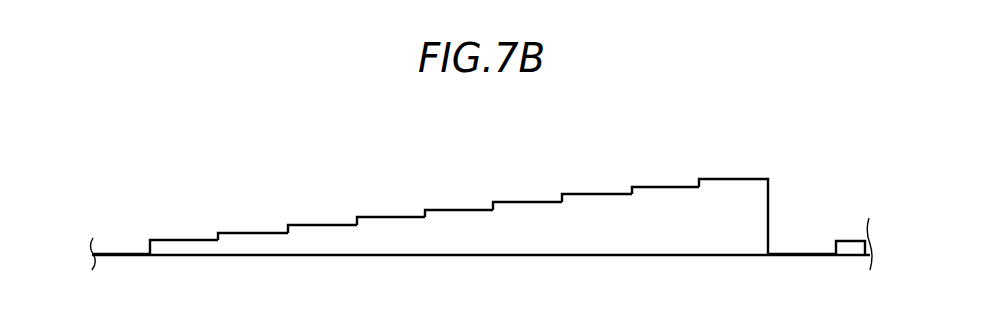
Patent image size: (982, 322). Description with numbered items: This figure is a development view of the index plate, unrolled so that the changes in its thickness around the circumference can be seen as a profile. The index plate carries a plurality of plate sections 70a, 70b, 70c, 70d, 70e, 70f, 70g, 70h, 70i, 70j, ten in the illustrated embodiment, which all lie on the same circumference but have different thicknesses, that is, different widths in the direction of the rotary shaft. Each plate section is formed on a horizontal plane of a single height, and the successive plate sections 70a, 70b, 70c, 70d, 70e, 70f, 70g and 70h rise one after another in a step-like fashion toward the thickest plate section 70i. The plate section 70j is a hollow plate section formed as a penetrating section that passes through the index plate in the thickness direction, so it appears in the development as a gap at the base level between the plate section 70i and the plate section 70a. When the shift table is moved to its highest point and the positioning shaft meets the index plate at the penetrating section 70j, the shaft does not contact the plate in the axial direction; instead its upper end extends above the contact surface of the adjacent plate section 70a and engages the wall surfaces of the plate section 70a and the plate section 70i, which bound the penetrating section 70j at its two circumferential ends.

The plate section 70a is at (180, 240).
The plate section 70b is at (249, 232).
The plate section 70c is at (318, 225).
The plate section 70d is at (387, 217).
The plate section 70e is at (455, 210).
The plate section 70f is at (523, 202).
The plate section 70g is at (592, 194).
The plate section 70h is at (661, 187).
The plate section 70i is at (728, 179).
The penetrating section 70j is at (116, 252).